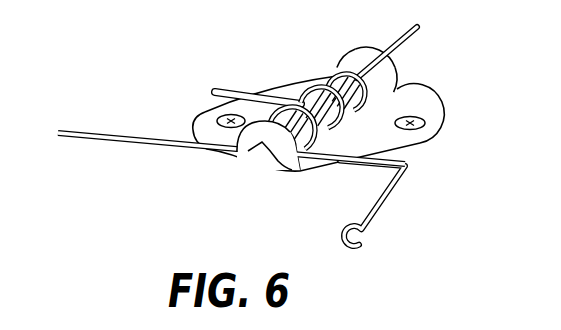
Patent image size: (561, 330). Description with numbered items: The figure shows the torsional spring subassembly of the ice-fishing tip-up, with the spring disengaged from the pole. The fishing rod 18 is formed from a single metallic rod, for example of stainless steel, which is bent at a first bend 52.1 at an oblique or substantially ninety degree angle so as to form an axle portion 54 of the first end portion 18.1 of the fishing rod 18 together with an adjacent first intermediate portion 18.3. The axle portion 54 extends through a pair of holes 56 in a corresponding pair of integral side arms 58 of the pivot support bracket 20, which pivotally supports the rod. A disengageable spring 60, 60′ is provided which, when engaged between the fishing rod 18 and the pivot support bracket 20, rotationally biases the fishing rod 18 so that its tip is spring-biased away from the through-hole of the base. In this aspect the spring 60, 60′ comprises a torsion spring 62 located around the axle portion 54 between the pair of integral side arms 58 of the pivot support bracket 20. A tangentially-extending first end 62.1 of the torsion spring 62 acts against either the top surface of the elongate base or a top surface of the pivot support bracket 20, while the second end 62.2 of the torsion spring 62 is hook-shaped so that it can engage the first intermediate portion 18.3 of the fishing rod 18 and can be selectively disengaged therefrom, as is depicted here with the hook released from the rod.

The pivot support bracket 20 is at (431, 95).
The axle portion 54 is at (390, 44).
The holes 56 is at (392, 58).
The integral side arms 58 is at (350, 55).
The disengageable spring 60 is at (396, 204).
The spring 60′ is at (365, 94).
The torsion spring 62 is at (396, 204).
The first end of the torsion spring 62.1 is at (238, 88).
The second end of the torsion spring 62.2 is at (380, 210).
The fishing rod 18 is at (272, 112).
The first end portion of the fishing rod 18.1 is at (415, 42).
The first intermediate portion of the fishing rod 18.3 is at (60, 137).
The first bend 52.1 is at (253, 167).